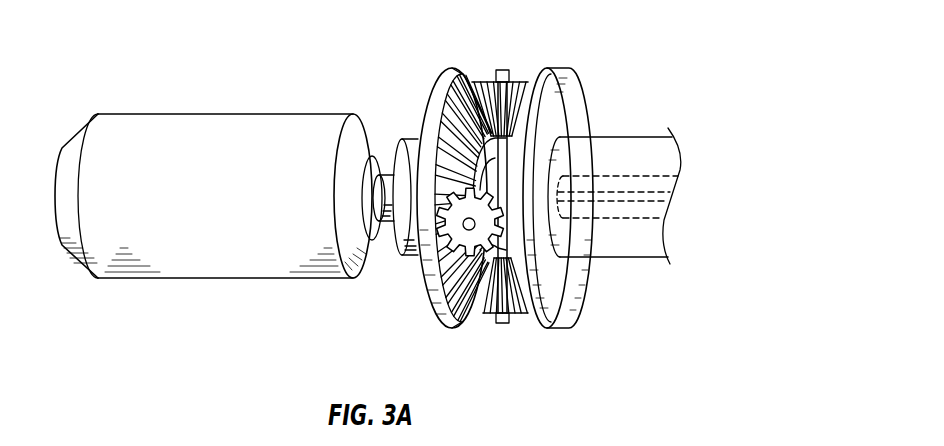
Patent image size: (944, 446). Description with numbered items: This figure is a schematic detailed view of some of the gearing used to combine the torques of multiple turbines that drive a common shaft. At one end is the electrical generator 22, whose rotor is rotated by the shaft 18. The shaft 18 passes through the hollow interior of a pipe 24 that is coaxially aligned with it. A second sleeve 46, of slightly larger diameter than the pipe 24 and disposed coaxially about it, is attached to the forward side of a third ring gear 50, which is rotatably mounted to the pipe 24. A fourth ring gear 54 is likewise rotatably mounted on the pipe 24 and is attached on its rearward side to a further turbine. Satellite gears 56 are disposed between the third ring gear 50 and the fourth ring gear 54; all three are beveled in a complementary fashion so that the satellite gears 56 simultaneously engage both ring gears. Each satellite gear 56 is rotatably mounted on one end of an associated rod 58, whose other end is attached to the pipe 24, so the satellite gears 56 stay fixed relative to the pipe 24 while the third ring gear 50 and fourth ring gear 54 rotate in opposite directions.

The electrical generator 22 is at (212, 113).
The pipe 24 is at (386, 235).
The second sleeve 46 is at (405, 140).
The fourth ring gear 54 is at (442, 82).
The third ring gear 50 is at (568, 95).
The shaft 18 is at (643, 202).
The satellite gears 56 is at (518, 80).
The rod 58 is at (505, 142).